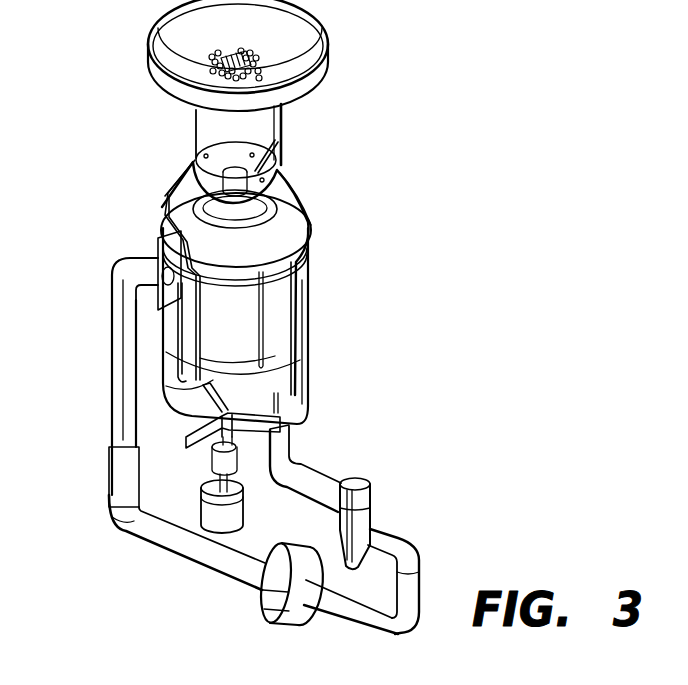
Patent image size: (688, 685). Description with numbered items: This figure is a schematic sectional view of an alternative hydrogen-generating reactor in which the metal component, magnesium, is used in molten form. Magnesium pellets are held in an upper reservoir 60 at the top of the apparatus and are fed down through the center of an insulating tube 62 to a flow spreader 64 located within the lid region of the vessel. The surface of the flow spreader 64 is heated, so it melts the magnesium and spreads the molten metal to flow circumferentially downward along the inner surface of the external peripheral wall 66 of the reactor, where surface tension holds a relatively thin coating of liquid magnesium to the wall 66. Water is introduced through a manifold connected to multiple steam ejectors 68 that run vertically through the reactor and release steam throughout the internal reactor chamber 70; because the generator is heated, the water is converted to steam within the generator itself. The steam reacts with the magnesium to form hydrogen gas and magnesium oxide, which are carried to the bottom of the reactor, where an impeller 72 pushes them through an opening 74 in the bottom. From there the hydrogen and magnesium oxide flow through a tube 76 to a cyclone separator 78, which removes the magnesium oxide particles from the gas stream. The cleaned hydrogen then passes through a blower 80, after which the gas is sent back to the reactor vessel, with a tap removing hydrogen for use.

The upper reservoir 60 is at (329, 61).
The insulating tube 62 is at (284, 140).
The flow spreader 64 is at (281, 242).
The external peripheral wall 66 is at (309, 278).
The steam ejectors 68 is at (182, 222).
The internal reactor chamber 70 is at (236, 320).
The impeller 72 is at (213, 442).
The opening 74 is at (283, 422).
The tube 76 is at (290, 465).
The cyclone separator 78 is at (371, 500).
The blower 80 is at (272, 597).